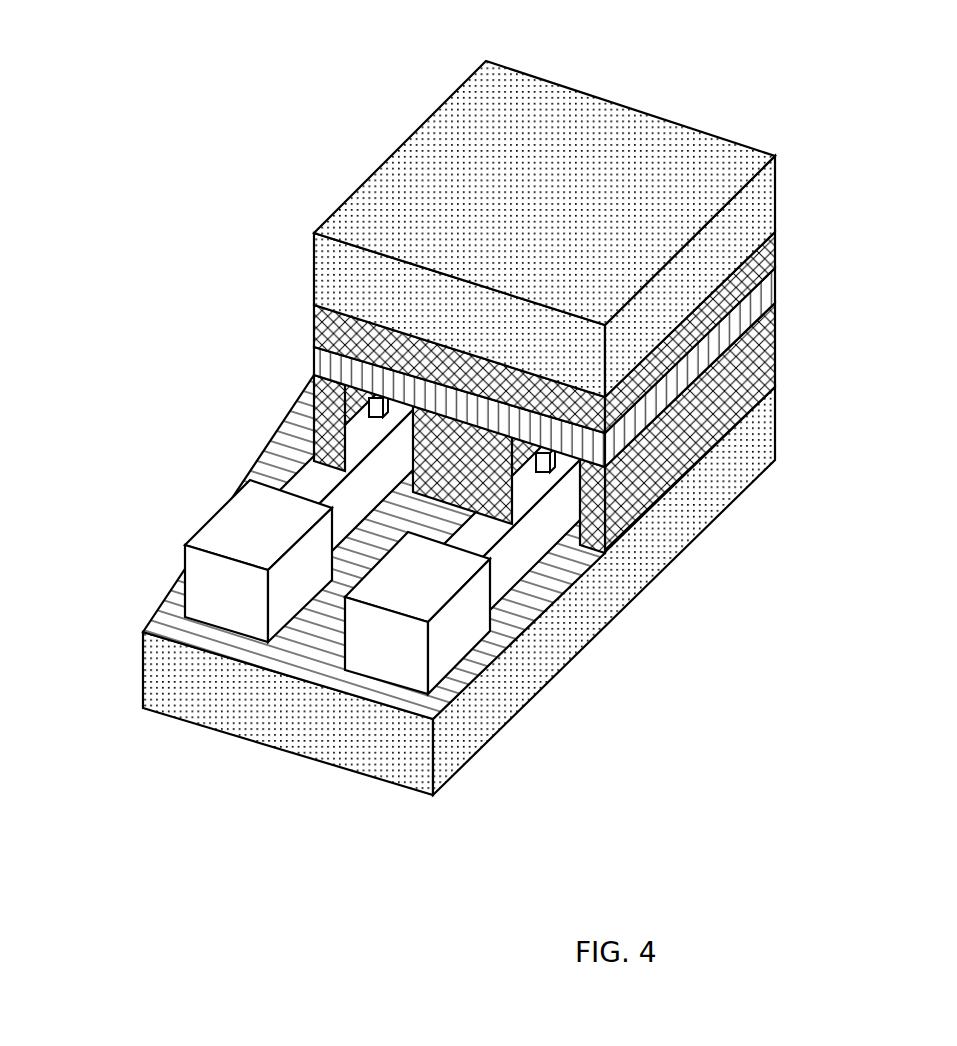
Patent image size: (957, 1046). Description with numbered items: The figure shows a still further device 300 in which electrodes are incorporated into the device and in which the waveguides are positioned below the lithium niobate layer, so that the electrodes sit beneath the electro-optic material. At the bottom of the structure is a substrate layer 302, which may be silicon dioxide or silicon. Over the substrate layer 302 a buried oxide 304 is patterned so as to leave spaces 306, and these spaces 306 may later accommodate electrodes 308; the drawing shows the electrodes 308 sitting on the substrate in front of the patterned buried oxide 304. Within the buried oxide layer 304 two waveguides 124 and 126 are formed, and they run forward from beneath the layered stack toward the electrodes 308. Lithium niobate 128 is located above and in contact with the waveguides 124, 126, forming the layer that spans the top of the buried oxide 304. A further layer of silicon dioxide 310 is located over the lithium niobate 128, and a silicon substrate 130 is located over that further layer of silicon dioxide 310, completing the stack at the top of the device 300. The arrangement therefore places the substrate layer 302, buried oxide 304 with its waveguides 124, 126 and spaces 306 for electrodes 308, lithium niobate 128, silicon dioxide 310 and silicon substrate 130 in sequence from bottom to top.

The device 300 is at (757, 93).
The silicon substrate 130 is at (427, 170).
The further layer of silicon dioxide 310 is at (760, 253).
The lithium niobate 128 is at (760, 293).
The buried oxide 304 is at (758, 360).
The spaces 306 is at (323, 395).
The substrate layer 302 is at (497, 712).
The electrodes 308 is at (463, 613).
The waveguide 124 is at (437, 425).
The waveguide 126 is at (473, 440).